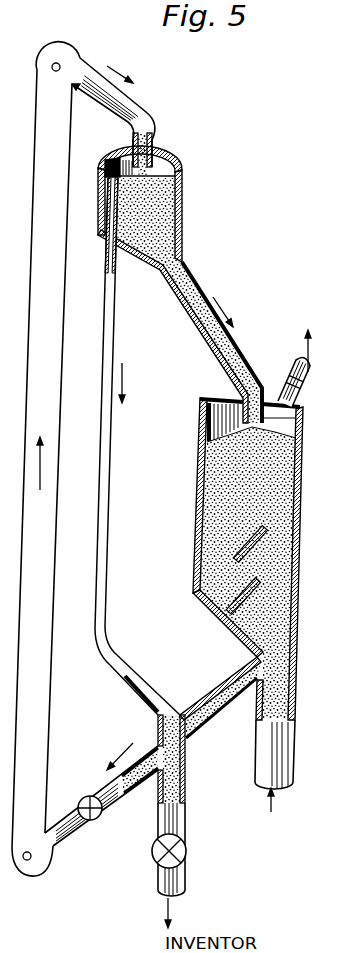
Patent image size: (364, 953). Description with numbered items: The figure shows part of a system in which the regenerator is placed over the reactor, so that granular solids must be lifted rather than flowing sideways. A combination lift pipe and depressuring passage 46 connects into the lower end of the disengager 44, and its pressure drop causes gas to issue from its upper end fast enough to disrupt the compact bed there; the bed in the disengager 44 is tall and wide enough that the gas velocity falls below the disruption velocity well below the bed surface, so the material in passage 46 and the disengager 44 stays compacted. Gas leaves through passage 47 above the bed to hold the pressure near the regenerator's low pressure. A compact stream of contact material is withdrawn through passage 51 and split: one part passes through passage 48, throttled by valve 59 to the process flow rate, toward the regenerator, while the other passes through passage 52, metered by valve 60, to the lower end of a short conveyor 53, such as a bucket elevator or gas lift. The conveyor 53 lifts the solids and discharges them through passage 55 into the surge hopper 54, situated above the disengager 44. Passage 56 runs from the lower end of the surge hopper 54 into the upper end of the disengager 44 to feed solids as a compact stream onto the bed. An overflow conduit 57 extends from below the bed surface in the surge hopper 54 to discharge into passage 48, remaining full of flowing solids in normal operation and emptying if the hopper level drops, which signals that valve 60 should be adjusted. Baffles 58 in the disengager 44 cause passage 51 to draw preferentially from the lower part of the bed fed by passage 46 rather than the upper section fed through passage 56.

The disengager 44 is at (200, 455).
The combination lift pipe and depressuring passage 46 is at (256, 764).
The gas removal passage 47 is at (290, 361).
The passage to regenerator 48 is at (157, 883).
The withdrawal passage 51 is at (216, 680).
The passage to conveyor 52 is at (61, 822).
The conveyor 53 is at (48, 717).
The surge hopper 54 is at (183, 203).
The conveyor discharge passage 55 is at (134, 110).
The supply passage 56 is at (189, 320).
The overflow conduit 57 is at (106, 614).
The baffles 58 is at (255, 586).
The valve 59 is at (152, 851).
The valve 60 is at (99, 817).